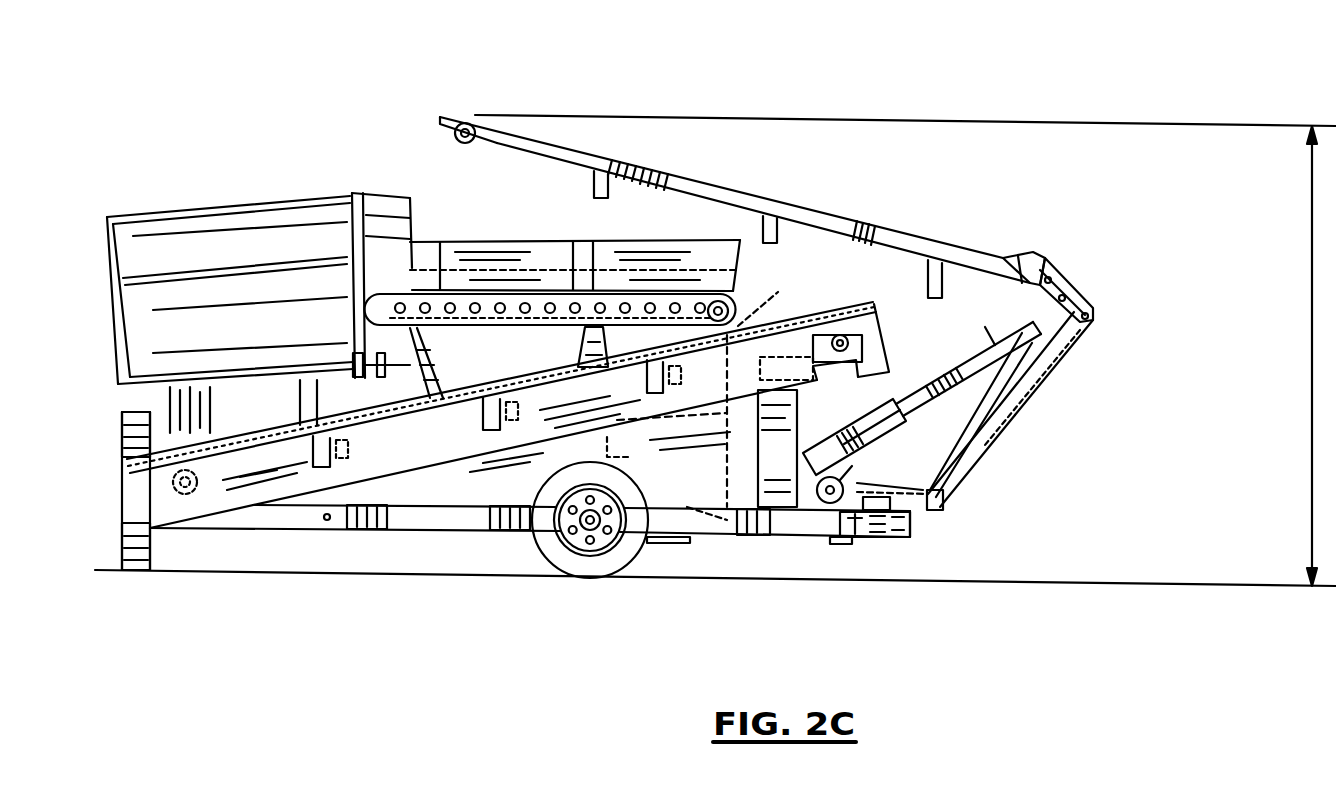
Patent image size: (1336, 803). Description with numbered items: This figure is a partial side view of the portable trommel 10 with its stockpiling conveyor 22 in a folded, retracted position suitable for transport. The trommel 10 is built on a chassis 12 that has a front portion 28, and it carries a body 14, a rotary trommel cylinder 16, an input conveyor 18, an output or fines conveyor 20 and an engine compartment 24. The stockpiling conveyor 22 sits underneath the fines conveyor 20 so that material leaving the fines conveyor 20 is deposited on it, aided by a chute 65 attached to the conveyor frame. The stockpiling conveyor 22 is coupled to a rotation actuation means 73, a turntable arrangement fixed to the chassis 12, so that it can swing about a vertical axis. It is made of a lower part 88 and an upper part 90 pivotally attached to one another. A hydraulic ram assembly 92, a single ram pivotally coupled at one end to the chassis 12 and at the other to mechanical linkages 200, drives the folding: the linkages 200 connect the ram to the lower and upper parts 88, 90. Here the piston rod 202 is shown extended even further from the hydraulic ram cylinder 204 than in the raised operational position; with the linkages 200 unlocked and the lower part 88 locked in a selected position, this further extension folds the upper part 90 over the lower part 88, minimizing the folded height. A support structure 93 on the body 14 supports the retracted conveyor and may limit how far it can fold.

The portable trommel 10 is at (715, 334).
The chassis 12 is at (528, 509).
The body 14 is at (553, 284).
The rotary trommel cylinder 16 is at (327, 197).
The input conveyor 18 is at (585, 290).
The fines conveyor 20 is at (530, 430).
The retractable stockpiling conveyor 22 is at (1036, 238).
The engine compartment 24 is at (713, 395).
The front portion 28 is at (965, 543).
The chute 65 is at (897, 395).
The rotation actuation means 73 is at (877, 537).
The lower part 88 is at (977, 366).
The upper part 90 is at (735, 207).
The hydraulic ram assembly 92 is at (1004, 425).
The support structure 93 is at (747, 195).
The mechanical linkages 200 is at (1096, 282).
The piston rod 202 is at (1040, 388).
The hydraulic ram cylinder 204 is at (970, 470).